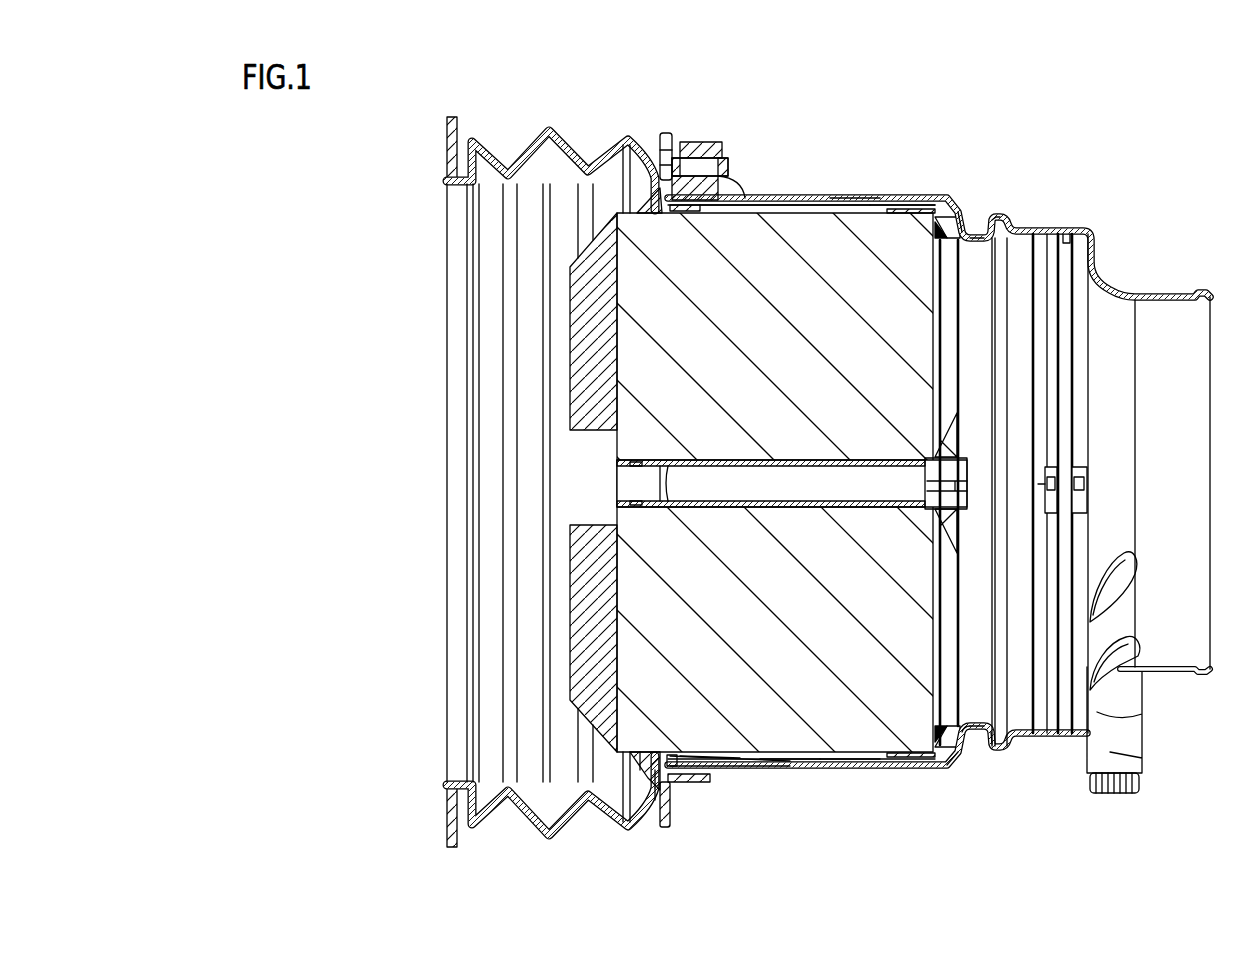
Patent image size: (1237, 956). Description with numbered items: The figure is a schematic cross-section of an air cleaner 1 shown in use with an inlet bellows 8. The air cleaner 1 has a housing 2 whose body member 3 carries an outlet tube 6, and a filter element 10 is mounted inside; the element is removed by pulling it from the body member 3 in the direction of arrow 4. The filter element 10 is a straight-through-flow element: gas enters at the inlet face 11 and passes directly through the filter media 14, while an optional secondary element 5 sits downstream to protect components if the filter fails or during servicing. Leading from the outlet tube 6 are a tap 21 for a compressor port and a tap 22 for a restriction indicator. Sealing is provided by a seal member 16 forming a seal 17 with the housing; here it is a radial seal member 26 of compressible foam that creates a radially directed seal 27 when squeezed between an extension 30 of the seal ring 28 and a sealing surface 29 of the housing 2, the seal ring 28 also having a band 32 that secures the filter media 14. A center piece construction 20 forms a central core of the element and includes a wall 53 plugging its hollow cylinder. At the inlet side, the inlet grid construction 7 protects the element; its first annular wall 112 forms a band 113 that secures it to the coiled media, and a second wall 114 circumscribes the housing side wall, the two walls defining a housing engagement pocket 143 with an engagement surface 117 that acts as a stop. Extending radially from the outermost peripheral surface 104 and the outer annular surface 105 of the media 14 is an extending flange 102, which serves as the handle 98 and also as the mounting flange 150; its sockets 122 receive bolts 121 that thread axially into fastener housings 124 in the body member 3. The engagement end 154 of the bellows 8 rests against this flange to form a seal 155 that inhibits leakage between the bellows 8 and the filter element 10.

The air cleaner 1 is at (1012, 130).
The housing 2 is at (765, 195).
The body member 3 is at (855, 198).
The arrow 4 is at (297, 483).
The secondary element 5 is at (1075, 282).
The outlet tube 6 is at (1172, 292).
The inlet grid construction 7 is at (552, 419).
The bellows 8 is at (492, 108).
The filter element 10 is at (817, 759).
The inlet face 11 is at (608, 630).
The filter media 14 is at (880, 212).
The seal member 16 is at (998, 226).
The seal 17 is at (967, 226).
The center piece construction 20 is at (784, 460).
The tap 21 is at (1142, 735).
The tap 22 is at (1130, 557).
The radial seal member 26 is at (993, 746).
The radially directed seal 27 is at (970, 760).
The seal ring 28 is at (944, 744).
The sealing surface 29 is at (978, 222).
The extension 30 is at (968, 728).
The band 32 is at (908, 215).
The wall 53 is at (670, 478).
The handle 98 is at (640, 830).
The extending flange 102 is at (658, 820).
The outermost peripheral surface 104 is at (806, 210).
The outer annular surface 105 is at (848, 770).
The first annular wall 112 is at (680, 756).
The band 113 is at (696, 758).
The second wall 114 is at (682, 790).
The engagement surface 117 is at (690, 760).
The bolts 121 is at (722, 176).
The sockets 122 is at (665, 160).
The fastener housings 124 is at (712, 144).
The housing engagement pocket 143 is at (672, 779).
The mounting flange 150 is at (684, 130).
The engagement end 154 is at (655, 776).
The seal 155 is at (655, 781).